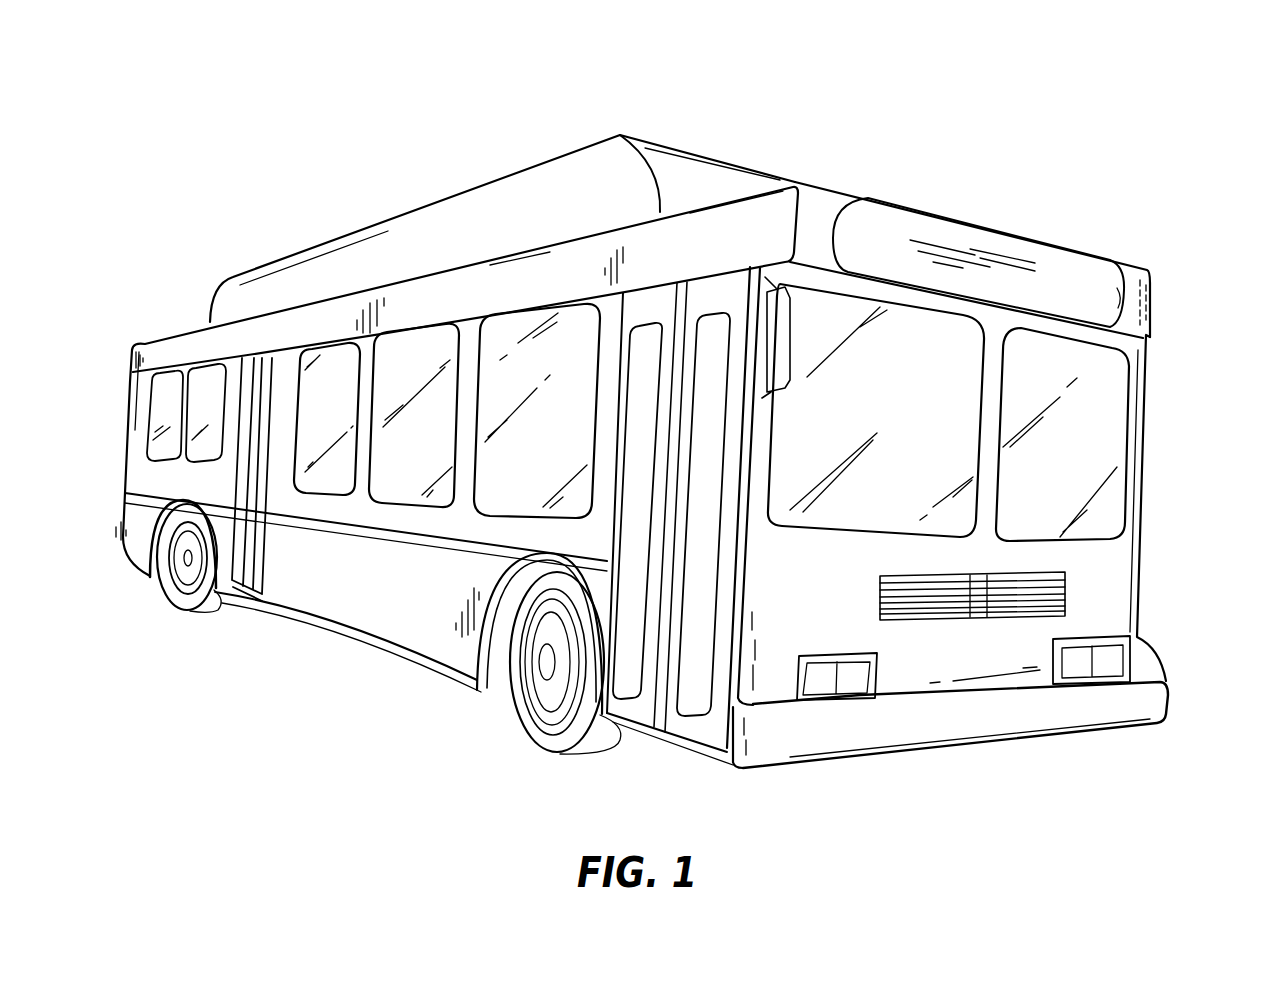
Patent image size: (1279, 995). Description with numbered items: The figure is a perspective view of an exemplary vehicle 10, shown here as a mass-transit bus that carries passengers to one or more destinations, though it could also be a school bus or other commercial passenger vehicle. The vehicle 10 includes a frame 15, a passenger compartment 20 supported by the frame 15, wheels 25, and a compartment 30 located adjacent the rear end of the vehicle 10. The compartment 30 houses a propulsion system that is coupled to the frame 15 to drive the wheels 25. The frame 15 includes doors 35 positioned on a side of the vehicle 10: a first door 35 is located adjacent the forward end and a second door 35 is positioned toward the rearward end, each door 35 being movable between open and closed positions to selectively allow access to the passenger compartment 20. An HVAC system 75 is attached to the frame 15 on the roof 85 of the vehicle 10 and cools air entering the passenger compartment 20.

The vehicle 10 is at (980, 78).
The frame 15 is at (345, 597).
The passenger compartment 20 is at (1088, 438).
The wheels 25 is at (183, 600).
The compartment 30 is at (137, 440).
The doors 35 is at (234, 367).
The HVAC system 75 is at (495, 223).
The roof 85 is at (1045, 228).